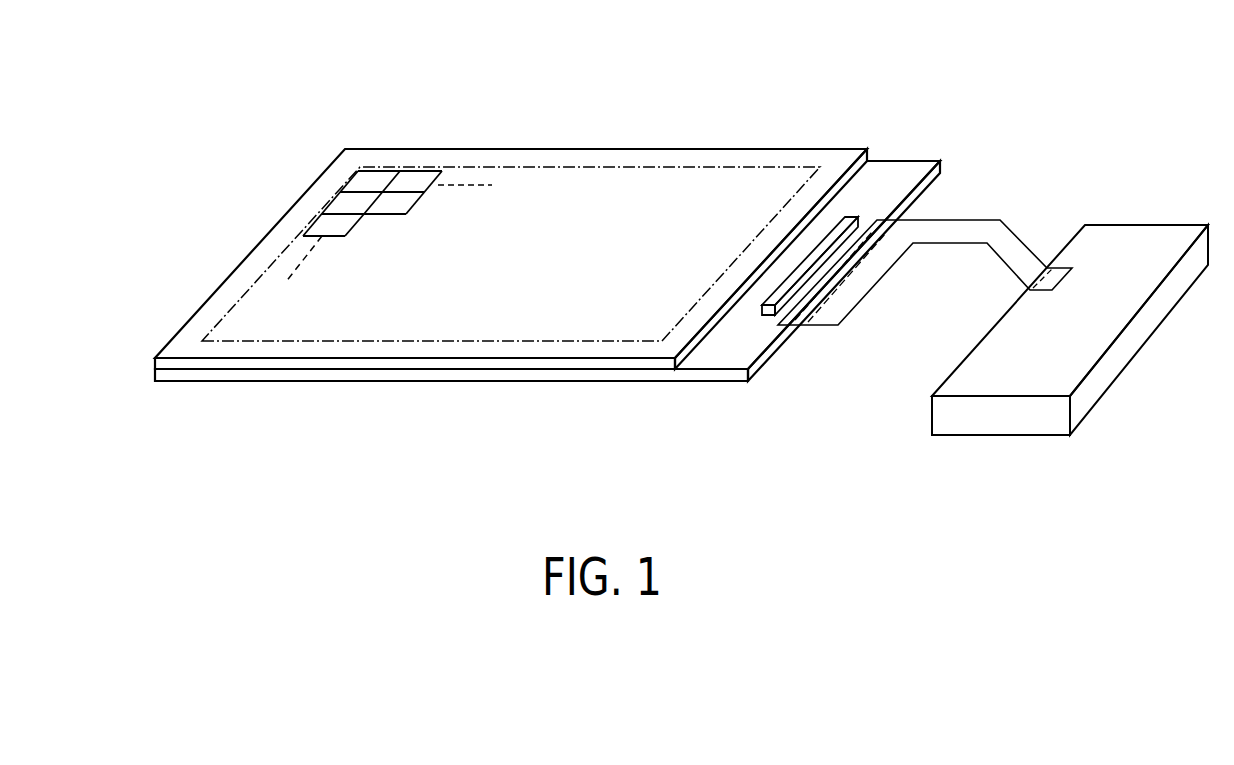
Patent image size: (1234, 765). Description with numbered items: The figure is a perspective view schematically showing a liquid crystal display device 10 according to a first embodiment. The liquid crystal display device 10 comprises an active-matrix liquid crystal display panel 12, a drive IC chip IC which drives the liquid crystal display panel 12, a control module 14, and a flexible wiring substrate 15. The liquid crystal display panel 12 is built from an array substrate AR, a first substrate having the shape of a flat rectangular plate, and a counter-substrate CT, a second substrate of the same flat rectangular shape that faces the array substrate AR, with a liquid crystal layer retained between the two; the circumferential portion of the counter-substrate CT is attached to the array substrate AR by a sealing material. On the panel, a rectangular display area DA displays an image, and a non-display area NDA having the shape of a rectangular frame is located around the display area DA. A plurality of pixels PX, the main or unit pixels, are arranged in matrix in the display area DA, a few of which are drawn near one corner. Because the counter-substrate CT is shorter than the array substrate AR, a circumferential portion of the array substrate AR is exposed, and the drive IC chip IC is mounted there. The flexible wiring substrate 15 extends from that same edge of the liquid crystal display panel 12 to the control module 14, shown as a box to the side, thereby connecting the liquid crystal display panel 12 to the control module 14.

The liquid crystal display device 10 is at (777, 80).
The liquid crystal display panel 12 is at (141, 366).
The control module 14 is at (1002, 420).
The flexible wiring substrate 15 is at (1014, 247).
The pixel PX is at (372, 178).
The display area DA is at (487, 170).
The non-display area NDA is at (600, 149).
The counter-substrate CT is at (828, 149).
The drive IC chip IC is at (850, 216).
The array substrate AR is at (923, 161).